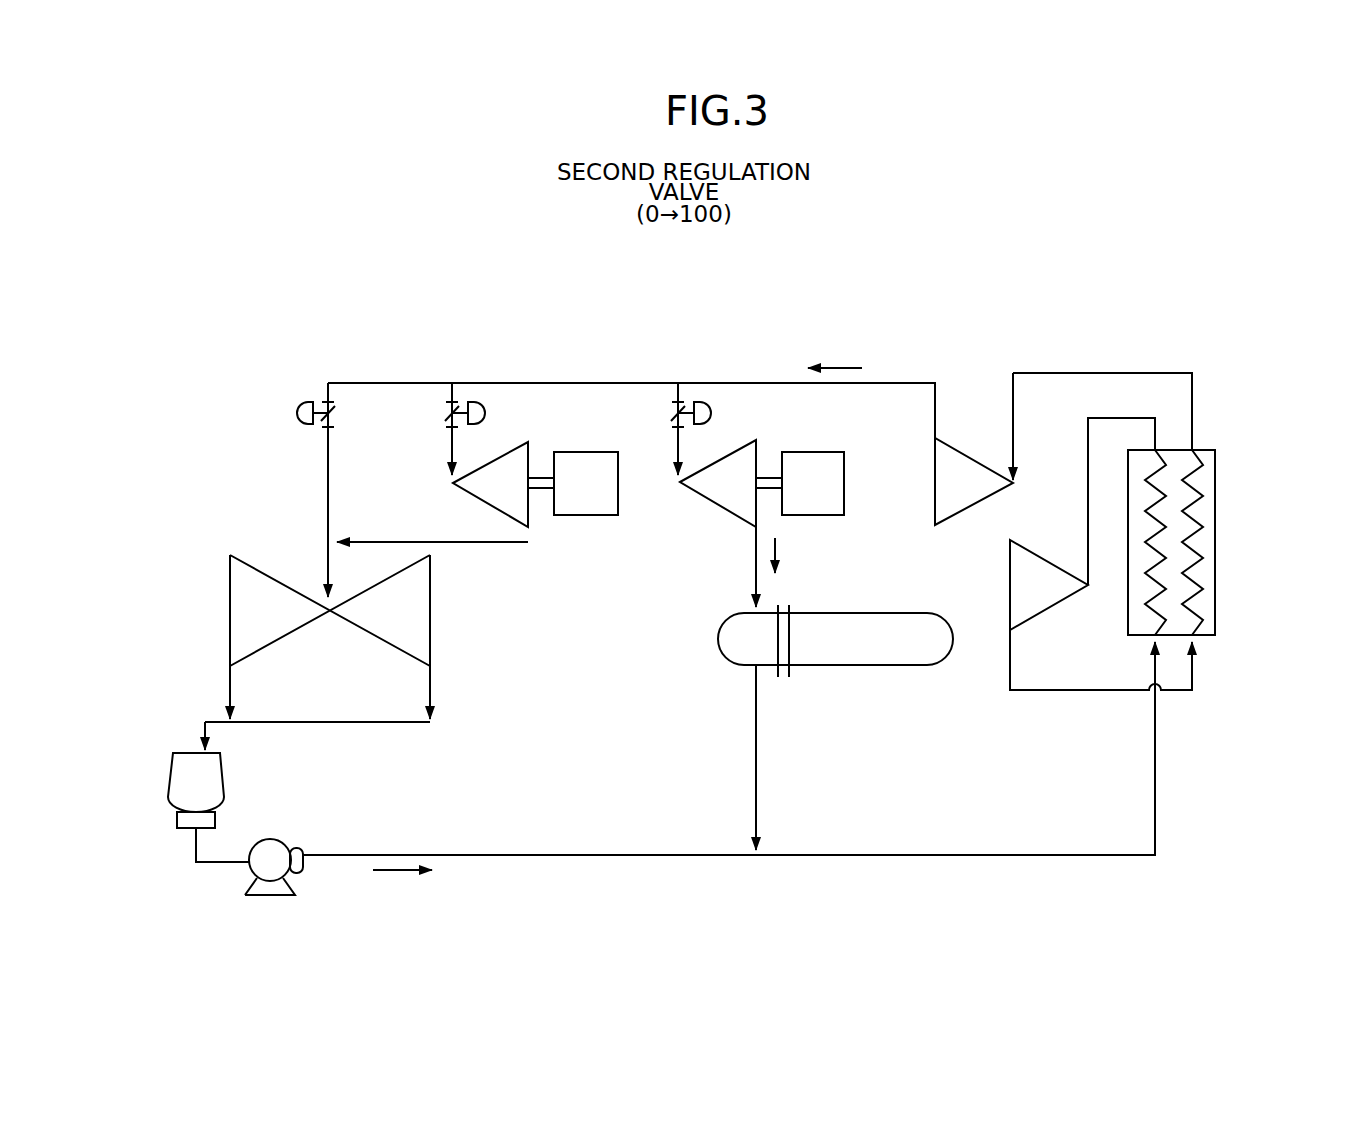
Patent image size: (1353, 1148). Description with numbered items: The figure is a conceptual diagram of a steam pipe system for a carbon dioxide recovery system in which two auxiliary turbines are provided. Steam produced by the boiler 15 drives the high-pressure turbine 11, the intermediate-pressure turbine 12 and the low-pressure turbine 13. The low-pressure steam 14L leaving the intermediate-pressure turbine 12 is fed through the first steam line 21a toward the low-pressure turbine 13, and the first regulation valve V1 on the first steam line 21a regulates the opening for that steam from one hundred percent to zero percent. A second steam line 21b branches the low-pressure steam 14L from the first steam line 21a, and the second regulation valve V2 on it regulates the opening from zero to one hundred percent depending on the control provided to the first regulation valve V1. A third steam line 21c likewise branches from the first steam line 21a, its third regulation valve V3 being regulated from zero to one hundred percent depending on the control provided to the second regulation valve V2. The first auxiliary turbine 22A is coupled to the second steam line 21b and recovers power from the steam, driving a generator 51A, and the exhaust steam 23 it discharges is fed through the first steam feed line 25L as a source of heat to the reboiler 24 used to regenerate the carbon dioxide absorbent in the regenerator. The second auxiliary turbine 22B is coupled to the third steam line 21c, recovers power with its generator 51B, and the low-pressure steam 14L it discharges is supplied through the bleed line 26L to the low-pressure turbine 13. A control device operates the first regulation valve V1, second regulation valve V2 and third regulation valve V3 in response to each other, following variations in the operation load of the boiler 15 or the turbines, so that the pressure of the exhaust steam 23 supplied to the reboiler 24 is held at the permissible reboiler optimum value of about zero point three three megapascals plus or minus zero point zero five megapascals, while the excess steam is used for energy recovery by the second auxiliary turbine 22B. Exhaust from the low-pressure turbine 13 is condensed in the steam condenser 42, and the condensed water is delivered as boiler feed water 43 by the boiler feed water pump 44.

The high-pressure turbine 11 is at (1010, 605).
The intermediate-pressure turbine 12 is at (971, 455).
The low-pressure turbine 13 is at (446, 641).
The low-pressure steam 14L is at (831, 368).
The boiler 15 is at (1212, 450).
The first steam line 21a is at (627, 383).
The second steam line 21b is at (678, 457).
The third steam line 21c is at (452, 455).
The first auxiliary turbine 22A is at (742, 434).
The second auxiliary turbine 22B is at (518, 436).
The exhaust steam 23 is at (782, 555).
The reboiler 24 is at (891, 613).
The first steam feed line 25L is at (754, 545).
The bleed line 26L is at (478, 545).
The steam condenser 42 is at (223, 775).
The boiler feed water 43 is at (405, 875).
The boiler feed water pump 44 is at (275, 843).
The first generator 51A is at (820, 452).
The second generator 51B is at (572, 452).
The first regulation valve V1 is at (300, 413).
The second regulation valve V2 is at (700, 400).
The third regulation valve V3 is at (473, 400).